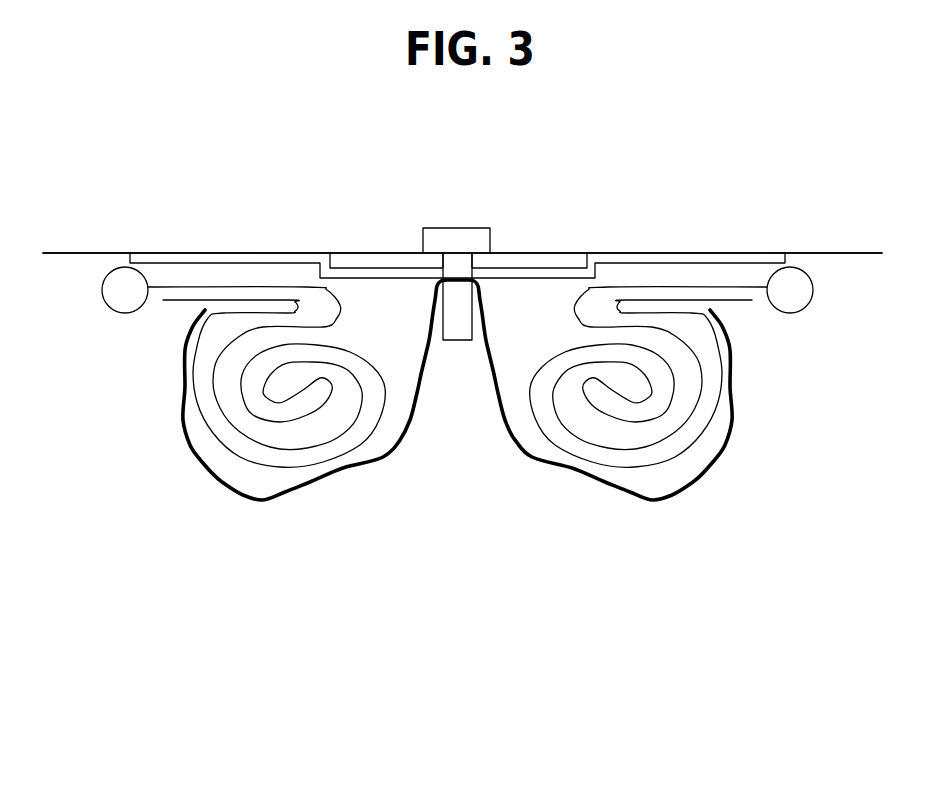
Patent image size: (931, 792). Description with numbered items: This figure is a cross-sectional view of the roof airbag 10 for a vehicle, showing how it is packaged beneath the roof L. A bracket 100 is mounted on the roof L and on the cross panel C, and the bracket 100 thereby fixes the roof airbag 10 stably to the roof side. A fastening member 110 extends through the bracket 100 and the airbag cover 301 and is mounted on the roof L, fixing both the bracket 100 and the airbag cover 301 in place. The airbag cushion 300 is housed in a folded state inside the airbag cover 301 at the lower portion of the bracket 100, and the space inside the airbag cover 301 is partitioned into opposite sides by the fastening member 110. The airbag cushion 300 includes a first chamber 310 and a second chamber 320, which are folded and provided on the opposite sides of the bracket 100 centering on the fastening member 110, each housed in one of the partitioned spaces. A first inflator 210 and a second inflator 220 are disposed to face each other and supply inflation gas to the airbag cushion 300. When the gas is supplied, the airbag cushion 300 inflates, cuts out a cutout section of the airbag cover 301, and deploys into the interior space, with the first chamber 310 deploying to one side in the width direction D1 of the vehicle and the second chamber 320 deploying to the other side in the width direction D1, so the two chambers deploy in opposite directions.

The roof airbag 10 is at (764, 250).
The roof L is at (93, 250).
The width direction D1 is at (655, 153).
The bracket 100 is at (258, 258).
The cross panel C is at (382, 262).
The fastening member 110 is at (460, 315).
The first inflator 210 is at (128, 300).
The second inflator 220 is at (787, 300).
The airbag cushion 300 is at (496, 497).
The airbag cover 301 is at (208, 468).
The first chamber 310 is at (287, 465).
The second chamber 320 is at (612, 465).